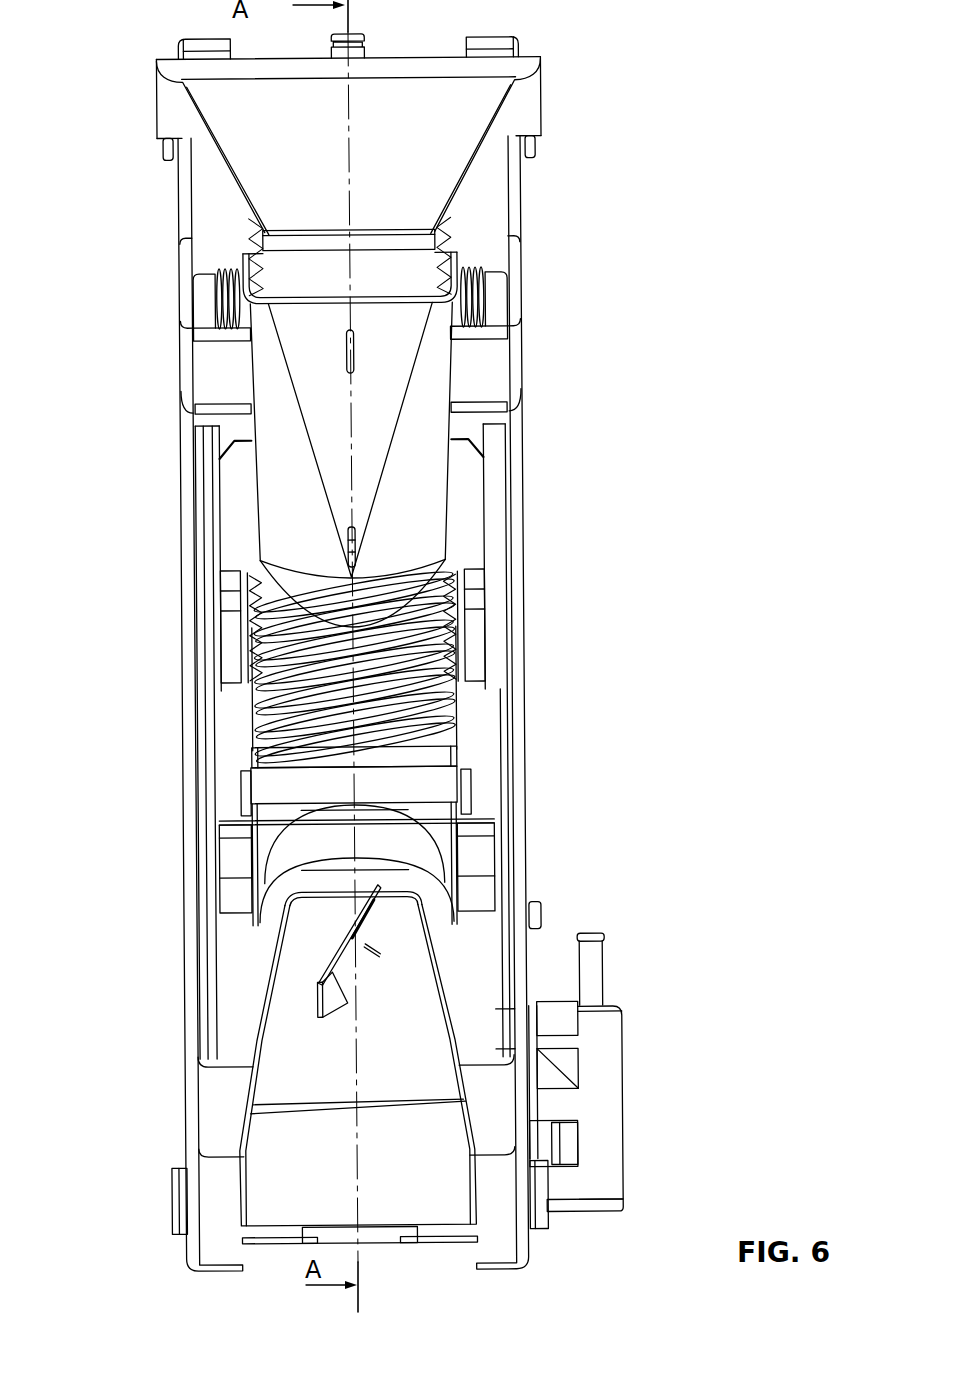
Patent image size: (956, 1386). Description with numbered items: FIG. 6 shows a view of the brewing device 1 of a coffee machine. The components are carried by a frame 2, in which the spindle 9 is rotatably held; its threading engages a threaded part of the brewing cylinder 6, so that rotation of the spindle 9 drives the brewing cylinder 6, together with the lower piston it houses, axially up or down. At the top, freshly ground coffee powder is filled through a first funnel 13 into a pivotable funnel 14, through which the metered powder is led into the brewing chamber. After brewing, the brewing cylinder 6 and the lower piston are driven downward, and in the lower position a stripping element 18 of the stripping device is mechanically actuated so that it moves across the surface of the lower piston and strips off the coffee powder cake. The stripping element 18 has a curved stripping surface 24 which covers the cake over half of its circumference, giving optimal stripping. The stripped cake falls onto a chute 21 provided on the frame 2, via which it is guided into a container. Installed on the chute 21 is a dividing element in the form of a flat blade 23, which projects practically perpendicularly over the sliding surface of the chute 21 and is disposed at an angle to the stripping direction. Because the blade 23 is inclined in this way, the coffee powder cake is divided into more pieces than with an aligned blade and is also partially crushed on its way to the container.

The brewing device 1 is at (605, 271).
The frame 2 is at (190, 705).
The brewing cylinder 6 is at (530, 967).
The spindle 9 is at (427, 670).
The first funnel 13 is at (455, 153).
The pivotable funnel 14 is at (425, 511).
The stripping element 18 is at (470, 813).
The chute 21 is at (273, 1086).
The blade 23 is at (345, 937).
The curved stripping surface 24 is at (425, 855).